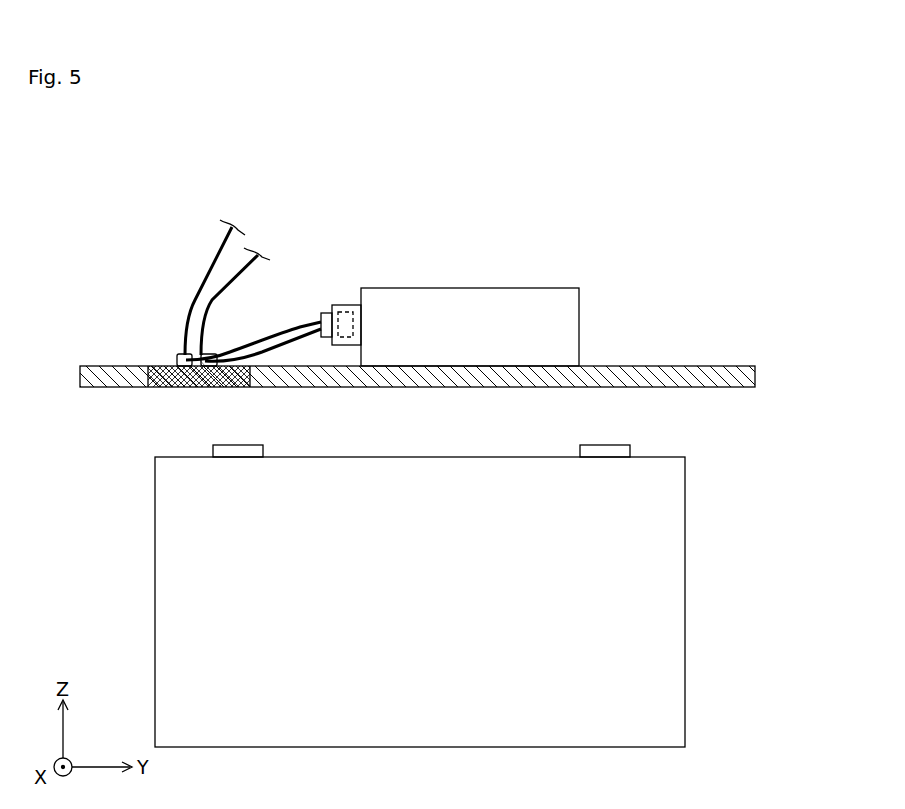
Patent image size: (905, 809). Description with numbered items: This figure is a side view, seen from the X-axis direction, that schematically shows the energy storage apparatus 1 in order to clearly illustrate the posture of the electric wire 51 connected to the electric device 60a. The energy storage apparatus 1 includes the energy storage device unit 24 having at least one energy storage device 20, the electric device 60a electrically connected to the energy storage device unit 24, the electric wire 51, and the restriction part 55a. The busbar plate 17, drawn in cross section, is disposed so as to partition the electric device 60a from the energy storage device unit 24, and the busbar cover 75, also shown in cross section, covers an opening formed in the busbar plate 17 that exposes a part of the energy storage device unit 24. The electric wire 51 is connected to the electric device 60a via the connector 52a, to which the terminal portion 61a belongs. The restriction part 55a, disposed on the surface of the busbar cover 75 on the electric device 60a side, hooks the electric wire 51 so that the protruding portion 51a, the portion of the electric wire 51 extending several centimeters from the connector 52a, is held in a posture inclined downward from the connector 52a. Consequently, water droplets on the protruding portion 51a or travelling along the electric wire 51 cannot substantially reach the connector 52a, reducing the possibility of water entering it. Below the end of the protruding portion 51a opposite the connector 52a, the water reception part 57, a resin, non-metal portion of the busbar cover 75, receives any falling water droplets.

The energy storage apparatus 1 is at (722, 185).
The busbar plate 17 is at (722, 367).
The energy storage device 20 is at (431, 576).
The energy storage device unit 24 is at (673, 443).
The electric wire 51 is at (222, 240).
The protruding portion 51a is at (212, 347).
The connector 52a is at (331, 311).
The restriction part 55a is at (172, 355).
The water reception part 57 is at (204, 366).
The electric device 60a is at (580, 330).
The terminal 61a is at (347, 306).
The busbar cover 75 is at (166, 387).